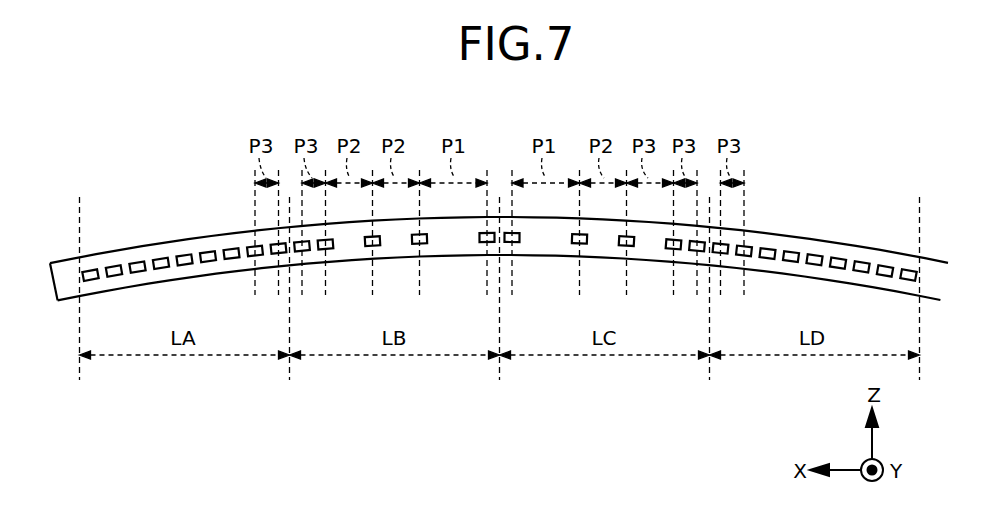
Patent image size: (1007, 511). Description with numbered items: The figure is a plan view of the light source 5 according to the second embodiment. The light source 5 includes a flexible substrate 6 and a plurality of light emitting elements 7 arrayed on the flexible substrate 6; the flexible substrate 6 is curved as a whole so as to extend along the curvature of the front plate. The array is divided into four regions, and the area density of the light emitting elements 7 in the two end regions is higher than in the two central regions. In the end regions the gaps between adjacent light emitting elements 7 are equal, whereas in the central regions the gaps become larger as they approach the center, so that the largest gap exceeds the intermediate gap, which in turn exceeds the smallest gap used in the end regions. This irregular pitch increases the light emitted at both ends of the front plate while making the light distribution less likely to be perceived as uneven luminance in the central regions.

The light source 5 is at (499, 209).
The flexible substrate 6 is at (930, 272).
The light emitting element 7 is at (906, 270).